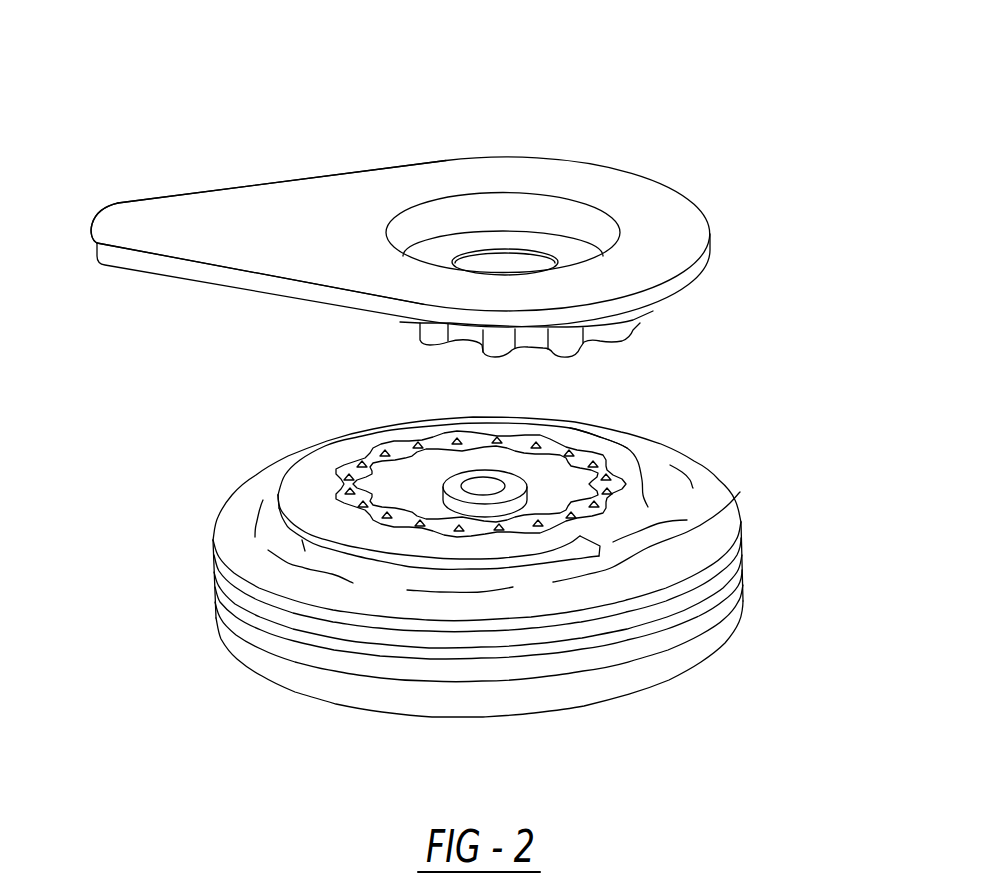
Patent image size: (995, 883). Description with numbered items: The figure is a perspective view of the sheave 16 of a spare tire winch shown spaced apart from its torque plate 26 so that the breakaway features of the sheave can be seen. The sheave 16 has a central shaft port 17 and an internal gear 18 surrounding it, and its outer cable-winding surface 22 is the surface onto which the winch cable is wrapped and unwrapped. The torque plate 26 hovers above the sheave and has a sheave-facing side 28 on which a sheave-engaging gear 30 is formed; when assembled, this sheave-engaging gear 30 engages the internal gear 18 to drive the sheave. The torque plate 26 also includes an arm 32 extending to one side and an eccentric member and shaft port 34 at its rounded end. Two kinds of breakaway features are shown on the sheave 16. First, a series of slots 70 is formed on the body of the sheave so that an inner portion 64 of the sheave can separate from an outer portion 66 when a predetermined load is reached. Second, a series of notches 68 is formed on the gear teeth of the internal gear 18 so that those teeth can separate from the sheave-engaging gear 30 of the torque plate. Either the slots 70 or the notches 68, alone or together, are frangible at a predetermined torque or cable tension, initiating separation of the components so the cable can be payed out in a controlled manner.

The sheave 16 is at (690, 657).
The shaft port 17 is at (493, 485).
The internal gear 18 is at (380, 467).
The outer cable-winding surface 22 is at (267, 637).
The torque plate 26 is at (663, 233).
The sheave-facing side 28 is at (218, 287).
The sheave-engaging gear 30 is at (620, 332).
The arm 32 is at (143, 227).
The eccentric member and shaft port 34 is at (580, 223).
The inner portion 64 is at (310, 508).
The outer portion 66 is at (713, 518).
The notches 68 is at (590, 431).
The slots 70 is at (650, 549).